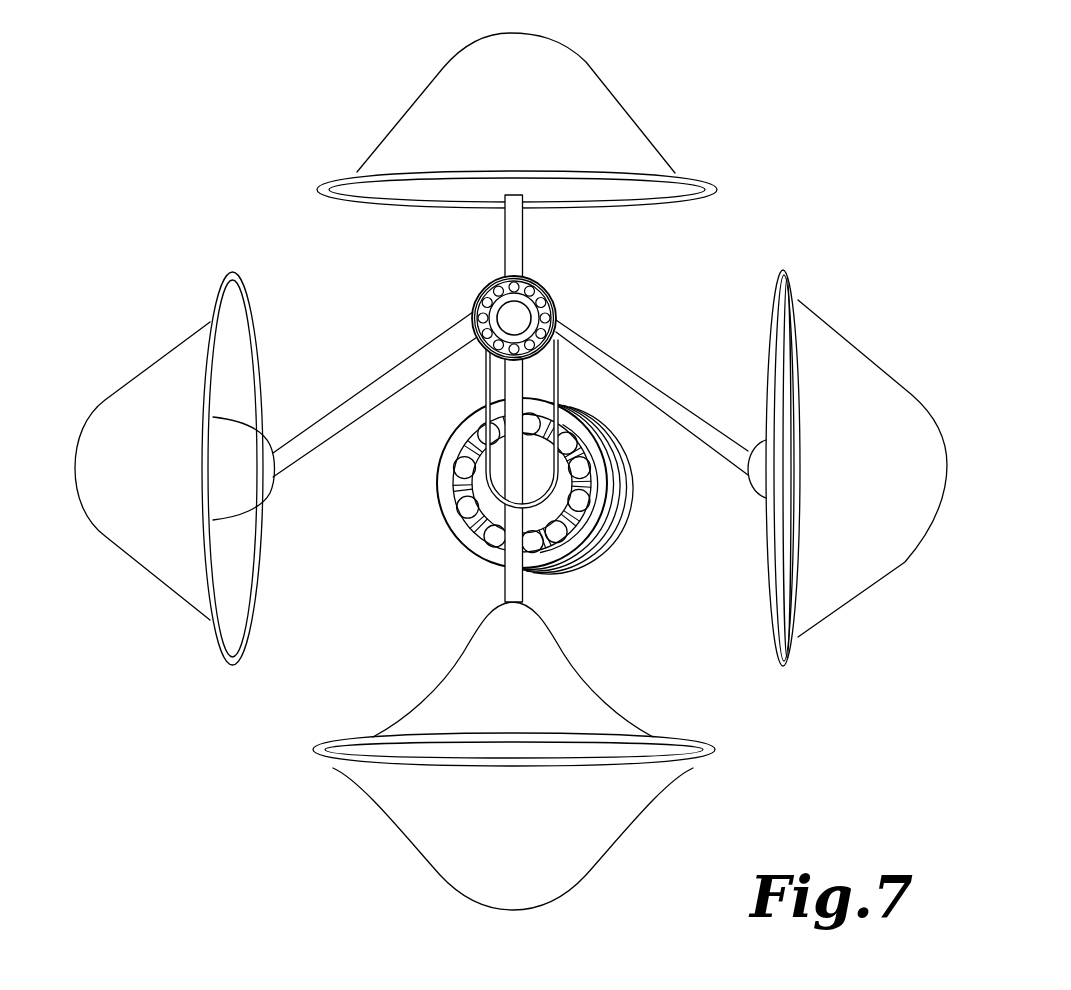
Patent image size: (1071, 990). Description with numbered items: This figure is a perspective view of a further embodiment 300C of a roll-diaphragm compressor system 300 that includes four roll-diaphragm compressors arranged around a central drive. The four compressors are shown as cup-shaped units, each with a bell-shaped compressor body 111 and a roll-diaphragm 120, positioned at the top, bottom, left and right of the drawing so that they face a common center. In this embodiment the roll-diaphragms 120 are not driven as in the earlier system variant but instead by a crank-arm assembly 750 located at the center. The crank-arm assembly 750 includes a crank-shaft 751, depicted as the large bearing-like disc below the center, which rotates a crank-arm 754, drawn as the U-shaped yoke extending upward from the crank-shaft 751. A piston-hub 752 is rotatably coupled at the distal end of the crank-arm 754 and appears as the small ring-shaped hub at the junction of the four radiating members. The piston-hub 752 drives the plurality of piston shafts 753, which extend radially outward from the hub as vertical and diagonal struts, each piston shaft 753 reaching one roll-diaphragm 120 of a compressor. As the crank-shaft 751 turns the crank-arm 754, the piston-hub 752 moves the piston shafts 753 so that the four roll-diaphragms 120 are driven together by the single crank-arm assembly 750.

The roll-diaphragm compressor system 300 is at (240, 136).
The further embodiment of roll-diaphragm compressor system 300C is at (221, 182).
The cup body (bell) 111 is at (630, 117).
The roll-diaphragm 120 is at (273, 440).
The crank-arm assembly 750 is at (622, 311).
The crank-shaft 751 is at (440, 512).
The piston-hub 752 is at (552, 290).
The piston shaft 753 is at (505, 222).
The crank-arm 754 is at (485, 372).